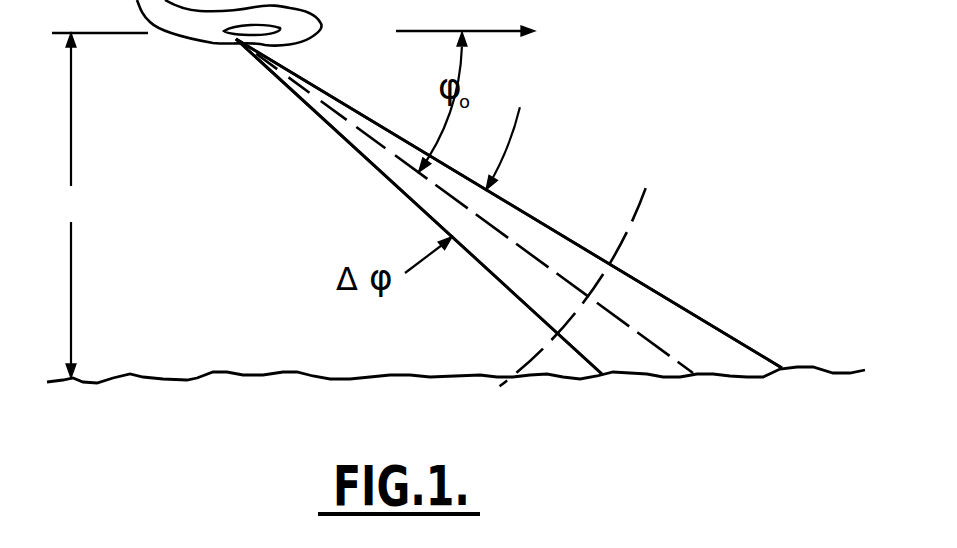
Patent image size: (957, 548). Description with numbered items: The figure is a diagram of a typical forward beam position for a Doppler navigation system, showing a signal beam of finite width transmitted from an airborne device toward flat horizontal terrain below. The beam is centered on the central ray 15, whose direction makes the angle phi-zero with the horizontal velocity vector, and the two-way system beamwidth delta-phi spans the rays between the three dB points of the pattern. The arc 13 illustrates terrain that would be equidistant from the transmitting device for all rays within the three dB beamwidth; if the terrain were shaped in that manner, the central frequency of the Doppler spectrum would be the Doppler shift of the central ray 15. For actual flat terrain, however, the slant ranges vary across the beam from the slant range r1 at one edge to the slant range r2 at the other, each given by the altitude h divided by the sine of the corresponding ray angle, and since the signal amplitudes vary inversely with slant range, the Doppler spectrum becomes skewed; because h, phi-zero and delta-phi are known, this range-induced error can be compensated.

The arc 13 is at (645, 197).
The central ray 15 is at (525, 248).
The altitude h is at (100, 205).
The slant range r1 is at (510, 290).
The slant range r2 is at (677, 303).